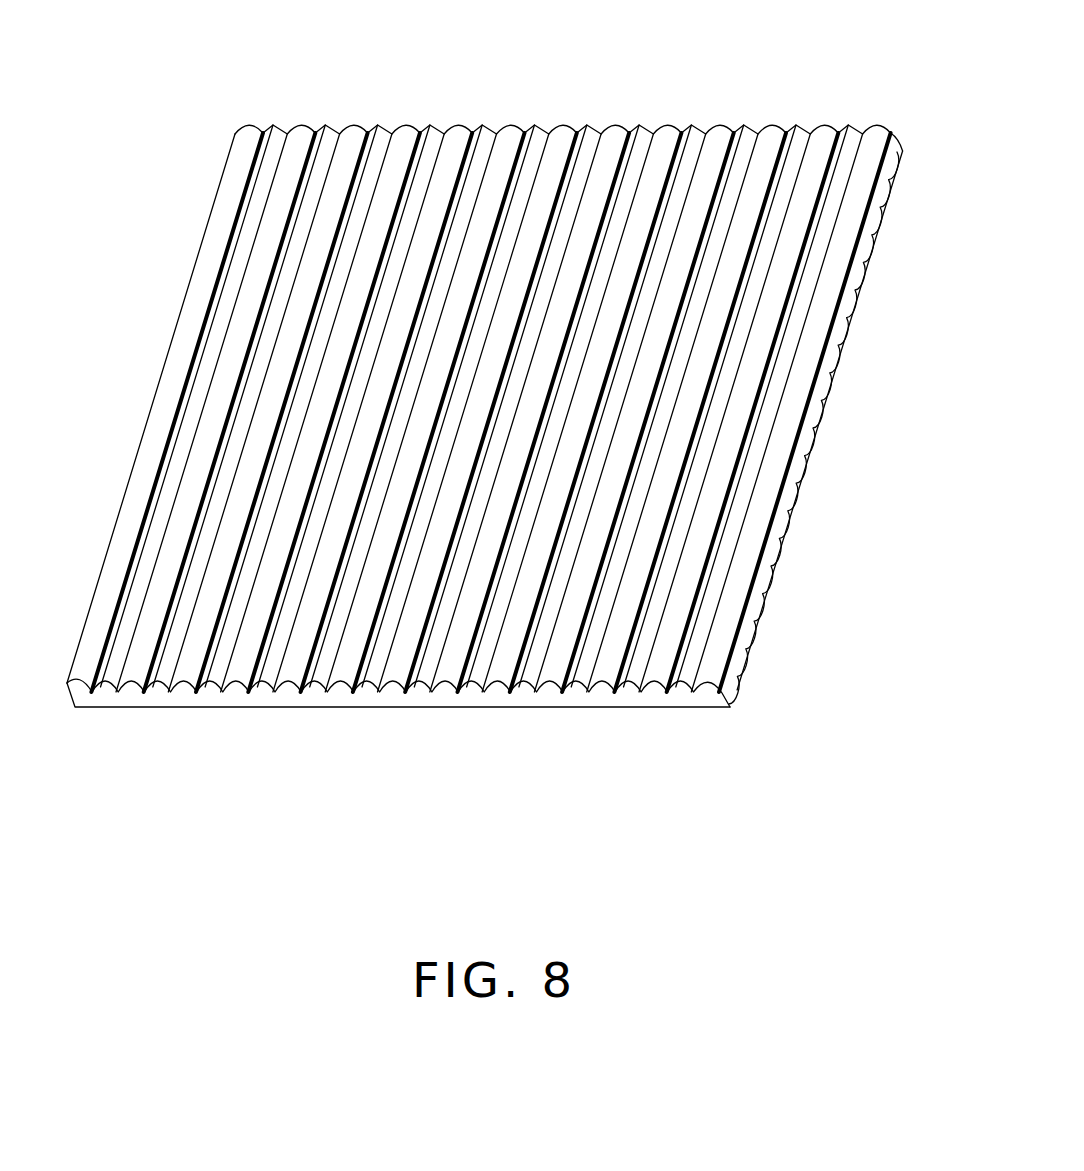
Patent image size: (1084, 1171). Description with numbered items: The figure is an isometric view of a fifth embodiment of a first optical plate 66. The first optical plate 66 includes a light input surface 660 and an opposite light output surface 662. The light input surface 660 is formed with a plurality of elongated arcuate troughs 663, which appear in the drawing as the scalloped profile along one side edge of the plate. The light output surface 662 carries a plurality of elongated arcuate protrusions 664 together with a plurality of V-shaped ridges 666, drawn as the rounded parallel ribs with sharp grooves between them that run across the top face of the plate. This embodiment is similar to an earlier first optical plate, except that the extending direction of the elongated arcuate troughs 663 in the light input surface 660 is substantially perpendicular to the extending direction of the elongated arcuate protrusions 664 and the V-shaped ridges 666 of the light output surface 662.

The first optical plate 66 is at (370, 92).
The light input surface 660 is at (177, 709).
The light output surface 662 is at (665, 688).
The elongated arcuate troughs 663 is at (858, 298).
The elongated arcuate protrusions 664 is at (614, 138).
The V-shaped ridges 666 is at (695, 145).